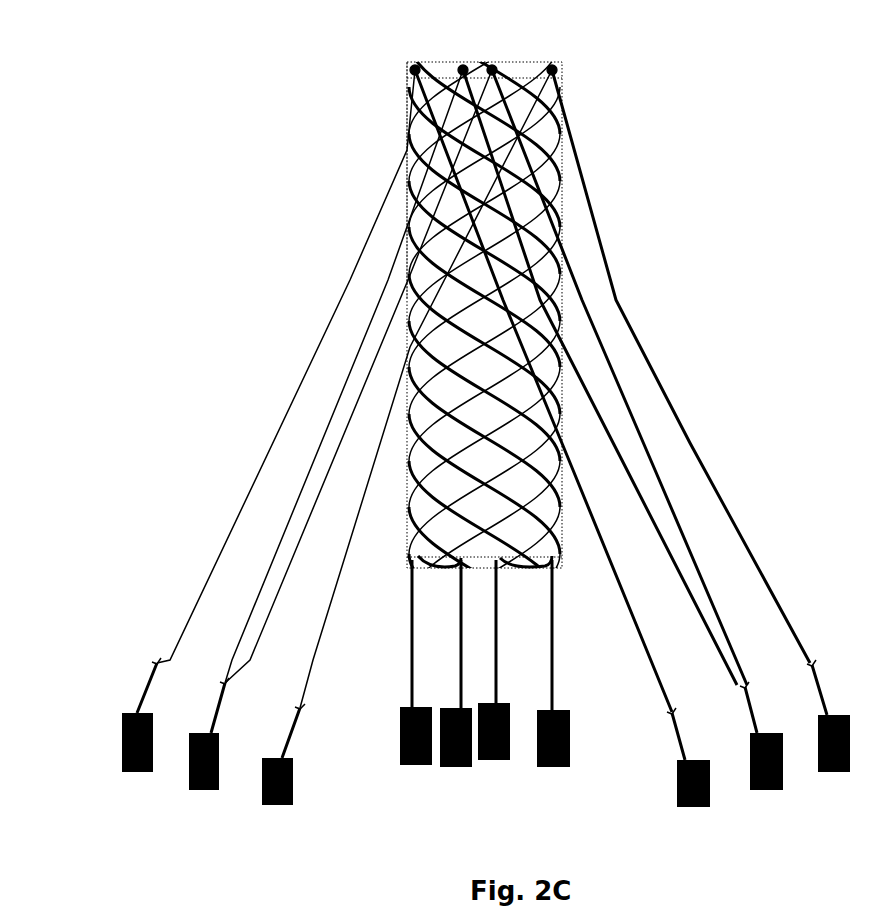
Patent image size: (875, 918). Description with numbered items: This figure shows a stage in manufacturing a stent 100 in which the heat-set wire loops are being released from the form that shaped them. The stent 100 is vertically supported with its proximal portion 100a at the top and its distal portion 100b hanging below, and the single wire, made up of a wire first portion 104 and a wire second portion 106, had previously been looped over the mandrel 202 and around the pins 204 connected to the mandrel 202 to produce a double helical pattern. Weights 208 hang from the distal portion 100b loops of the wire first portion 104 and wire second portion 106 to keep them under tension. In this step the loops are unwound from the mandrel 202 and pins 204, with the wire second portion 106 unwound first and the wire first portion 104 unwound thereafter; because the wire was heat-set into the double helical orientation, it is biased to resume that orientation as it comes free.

The stent 100 is at (340, 293).
The proximal portion 100a is at (405, 157).
The distal portion 100b is at (195, 565).
The wire first portion 104 is at (680, 420).
The wire second portion 106 is at (232, 520).
The mandrel 202 is at (545, 137).
The pins 204 is at (552, 67).
The weights 208 is at (677, 793).